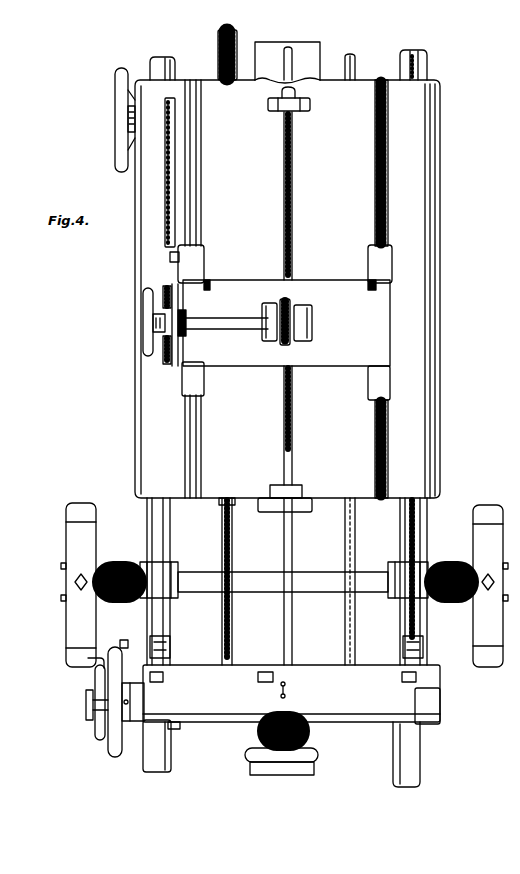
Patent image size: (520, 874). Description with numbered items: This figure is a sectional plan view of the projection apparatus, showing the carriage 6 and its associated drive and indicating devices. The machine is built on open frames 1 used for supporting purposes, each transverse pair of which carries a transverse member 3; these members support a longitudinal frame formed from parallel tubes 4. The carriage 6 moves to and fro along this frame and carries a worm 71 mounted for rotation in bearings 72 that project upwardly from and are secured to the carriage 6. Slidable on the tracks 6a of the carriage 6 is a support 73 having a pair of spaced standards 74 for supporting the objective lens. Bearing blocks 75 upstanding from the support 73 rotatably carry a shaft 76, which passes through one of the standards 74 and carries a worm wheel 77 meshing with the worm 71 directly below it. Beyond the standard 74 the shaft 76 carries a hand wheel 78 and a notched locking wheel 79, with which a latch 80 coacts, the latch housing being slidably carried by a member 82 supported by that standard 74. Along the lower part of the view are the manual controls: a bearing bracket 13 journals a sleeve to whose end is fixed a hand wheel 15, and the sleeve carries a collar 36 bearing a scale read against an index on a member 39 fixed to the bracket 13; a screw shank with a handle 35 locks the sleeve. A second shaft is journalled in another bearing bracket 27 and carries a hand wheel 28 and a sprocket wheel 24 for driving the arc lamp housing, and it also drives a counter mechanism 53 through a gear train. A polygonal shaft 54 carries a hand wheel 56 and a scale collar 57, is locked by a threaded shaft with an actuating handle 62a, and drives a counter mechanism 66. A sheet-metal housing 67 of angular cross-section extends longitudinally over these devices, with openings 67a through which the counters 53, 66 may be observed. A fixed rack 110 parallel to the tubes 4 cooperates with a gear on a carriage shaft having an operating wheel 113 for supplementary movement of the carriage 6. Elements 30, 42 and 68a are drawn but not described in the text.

The open frame 1 is at (78, 533).
The transverse member 3 is at (120, 590).
The tube 4 is at (165, 62).
The carriage 6 is at (431, 452).
The track 6a is at (195, 114).
The bearing bracket 13 is at (218, 58).
The hand wheel 15 is at (108, 740).
The sprocket wheel 24 is at (353, 62).
The bearing bracket 27 is at (420, 726).
The hand wheel 28 is at (97, 676).
The knob 30 is at (86, 690).
The handle 35 is at (177, 729).
The collar 36 is at (142, 664).
The index member 39 is at (148, 700).
The clamp 42 is at (163, 677).
The counter mechanism 53 is at (405, 682).
The shaft 54 is at (292, 58).
The hand wheel 56 is at (250, 765).
The collar 57 is at (262, 733).
The actuating handle 62a is at (288, 688).
The counter mechanism 66 is at (265, 672).
The housing 67 is at (358, 714).
The opening 67a is at (160, 676).
The bearing bracket 68a is at (280, 502).
The worm 71 is at (293, 408).
The bearing 72 is at (276, 112).
The support 73 is at (368, 264).
The standard 74 is at (198, 290).
The bearing block 75 is at (262, 312).
The shaft 76 is at (224, 322).
The worm wheel 77 is at (292, 306).
The hand wheel 78 is at (142, 302).
The locking wheel 79 is at (165, 288).
The latch 80 is at (165, 345).
The member 82 is at (181, 320).
The rack 110 is at (231, 43).
The operating wheel 113 is at (117, 120).